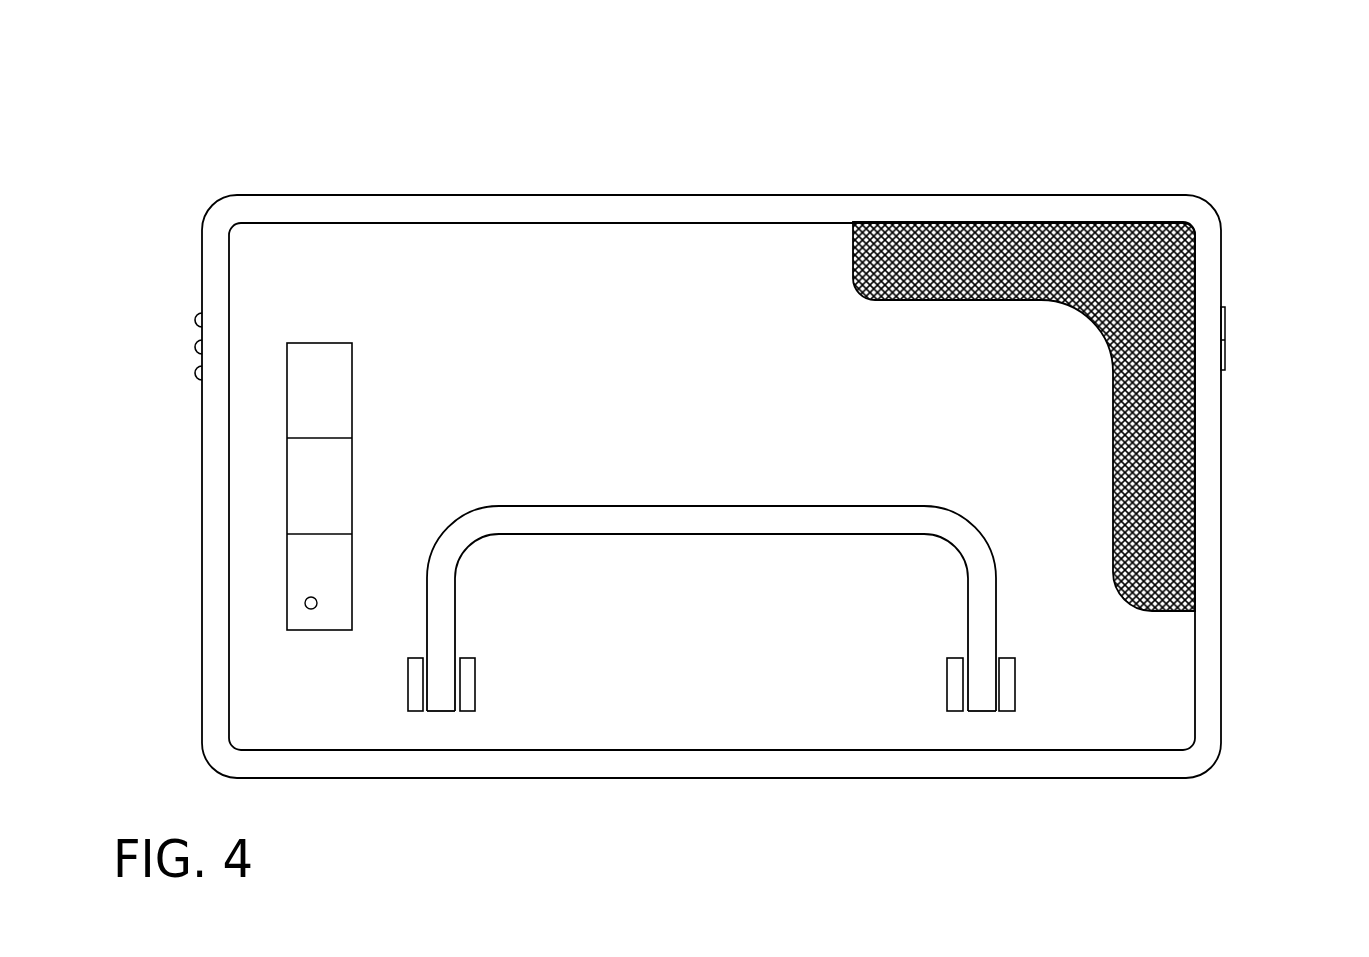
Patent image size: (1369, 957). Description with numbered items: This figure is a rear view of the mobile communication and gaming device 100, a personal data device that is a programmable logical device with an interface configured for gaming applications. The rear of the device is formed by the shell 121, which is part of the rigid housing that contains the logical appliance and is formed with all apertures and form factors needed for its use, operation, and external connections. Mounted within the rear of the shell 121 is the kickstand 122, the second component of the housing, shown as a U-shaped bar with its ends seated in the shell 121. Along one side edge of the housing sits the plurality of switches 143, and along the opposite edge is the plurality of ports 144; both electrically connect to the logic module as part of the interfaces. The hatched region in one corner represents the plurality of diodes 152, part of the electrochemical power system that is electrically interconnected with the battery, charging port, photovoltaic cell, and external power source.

The mobile communication and gaming device 100 is at (167, 135).
The shell 121 is at (1117, 693).
The kickstand 122 is at (932, 535).
The plurality of switches 143 is at (1226, 353).
The plurality of ports 144 is at (196, 347).
The plurality of diodes 152 is at (1153, 305).